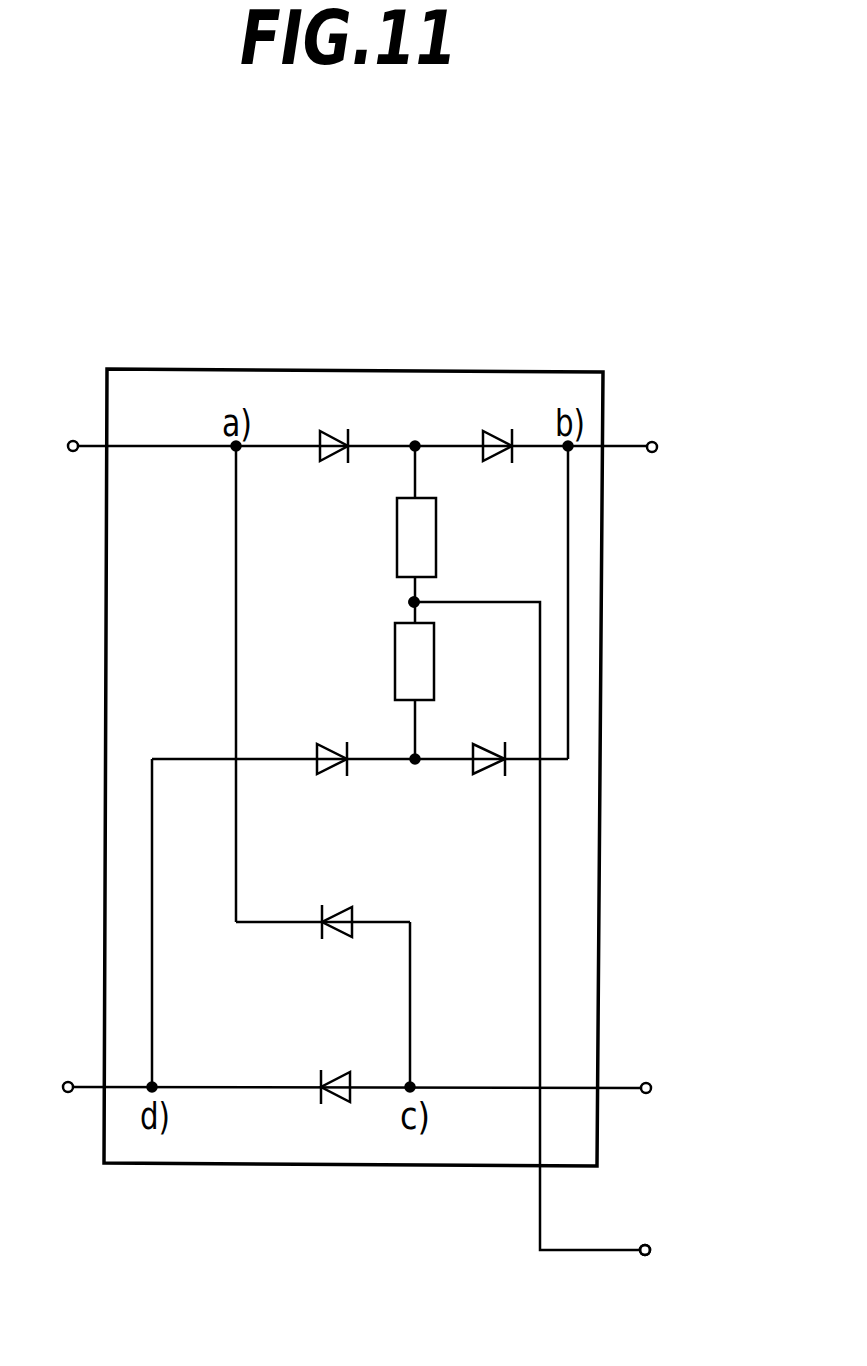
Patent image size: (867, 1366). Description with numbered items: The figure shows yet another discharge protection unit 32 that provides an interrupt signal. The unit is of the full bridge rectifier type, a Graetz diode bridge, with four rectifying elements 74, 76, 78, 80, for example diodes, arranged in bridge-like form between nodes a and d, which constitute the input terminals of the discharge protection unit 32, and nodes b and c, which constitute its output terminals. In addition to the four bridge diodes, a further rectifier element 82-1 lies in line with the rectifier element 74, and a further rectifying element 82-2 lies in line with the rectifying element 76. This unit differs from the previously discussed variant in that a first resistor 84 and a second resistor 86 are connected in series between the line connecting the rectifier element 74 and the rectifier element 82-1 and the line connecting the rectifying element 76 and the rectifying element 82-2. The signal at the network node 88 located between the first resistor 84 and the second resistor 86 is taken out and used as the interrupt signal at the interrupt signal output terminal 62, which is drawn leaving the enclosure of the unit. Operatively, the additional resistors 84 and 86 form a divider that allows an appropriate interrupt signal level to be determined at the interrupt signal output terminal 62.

The discharge protection unit 32 is at (549, 370).
The interrupt signal output terminal 62 is at (651, 1251).
The rectifying element 74 is at (337, 461).
The rectifying element 76 is at (334, 774).
The rectifying element 78 is at (338, 937).
The rectifying element 80 is at (339, 1102).
The rectifier element 82-1 is at (503, 461).
The rectifying element 82-2 is at (492, 774).
The first resistor 84 is at (436, 556).
The second resistor 86 is at (434, 661).
The network node 88 is at (402, 600).